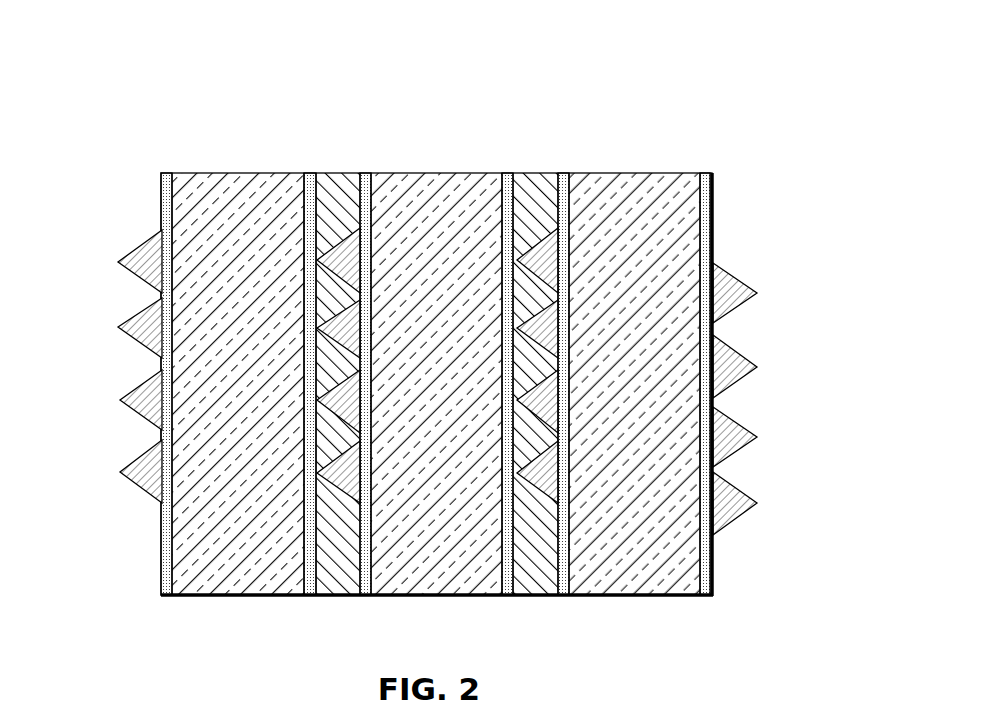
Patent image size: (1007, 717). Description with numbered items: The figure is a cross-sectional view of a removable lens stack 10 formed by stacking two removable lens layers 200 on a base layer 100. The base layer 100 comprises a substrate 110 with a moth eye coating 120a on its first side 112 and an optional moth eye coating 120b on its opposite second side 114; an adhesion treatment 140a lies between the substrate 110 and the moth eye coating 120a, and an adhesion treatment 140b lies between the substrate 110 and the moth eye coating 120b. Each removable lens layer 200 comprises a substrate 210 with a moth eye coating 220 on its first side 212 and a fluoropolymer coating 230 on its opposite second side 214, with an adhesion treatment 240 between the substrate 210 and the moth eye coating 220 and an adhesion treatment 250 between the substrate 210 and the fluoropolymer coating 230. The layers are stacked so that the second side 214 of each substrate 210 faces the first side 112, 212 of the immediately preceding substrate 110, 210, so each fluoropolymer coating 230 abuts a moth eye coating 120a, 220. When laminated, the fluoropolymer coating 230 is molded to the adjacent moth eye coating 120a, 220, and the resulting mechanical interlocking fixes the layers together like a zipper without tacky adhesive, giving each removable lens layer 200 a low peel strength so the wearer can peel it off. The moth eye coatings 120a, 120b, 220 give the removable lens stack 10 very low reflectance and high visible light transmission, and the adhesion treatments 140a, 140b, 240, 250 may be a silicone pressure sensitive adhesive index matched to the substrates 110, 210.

The removable lens stack 10 is at (828, 131).
The base layer 100 is at (755, 125).
The substrate 110 is at (650, 572).
The first side 112 is at (568, 542).
The second side 114 is at (702, 557).
The moth eye coating 120a is at (540, 240).
The moth eye coating 120b is at (737, 493).
The adhesion treatment 140a is at (563, 227).
The adhesion treatment 140b is at (703, 195).
The removable lens layer 200 is at (558, 90).
The substrate 210 is at (238, 572).
The first side 212 is at (172, 550).
The second side 214 is at (305, 540).
The moth eye coating 220 is at (145, 463).
The fluoropolymer coating 230 is at (330, 192).
The adhesion treatment 240 is at (167, 212).
The adhesion treatment 250 is at (308, 207).